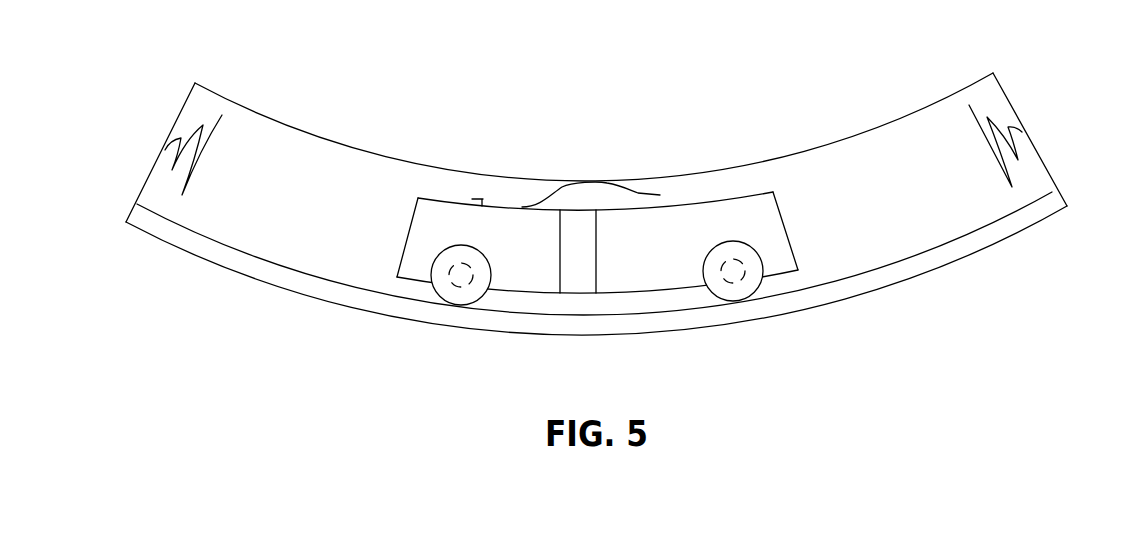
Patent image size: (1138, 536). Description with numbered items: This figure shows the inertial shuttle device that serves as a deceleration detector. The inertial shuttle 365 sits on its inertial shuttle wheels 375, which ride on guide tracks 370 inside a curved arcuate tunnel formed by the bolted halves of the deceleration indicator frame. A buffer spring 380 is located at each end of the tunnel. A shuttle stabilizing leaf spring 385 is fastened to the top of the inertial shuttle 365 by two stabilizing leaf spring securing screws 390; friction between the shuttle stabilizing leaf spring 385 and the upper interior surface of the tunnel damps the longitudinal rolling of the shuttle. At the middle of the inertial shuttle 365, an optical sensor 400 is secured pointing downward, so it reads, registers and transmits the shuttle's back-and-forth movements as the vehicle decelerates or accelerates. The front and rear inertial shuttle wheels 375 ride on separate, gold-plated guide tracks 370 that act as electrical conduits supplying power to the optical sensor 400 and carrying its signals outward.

The inertial shuttle 365 is at (447, 198).
The guide tracks 370 is at (240, 252).
The inertial shuttle wheels 375 is at (457, 265).
The buffer spring 380 is at (172, 138).
The shuttle stabilizing leaf spring 385 is at (571, 183).
The stabilizing leaf spring securing screws 390 is at (504, 205).
The optical sensor 400 is at (570, 210).